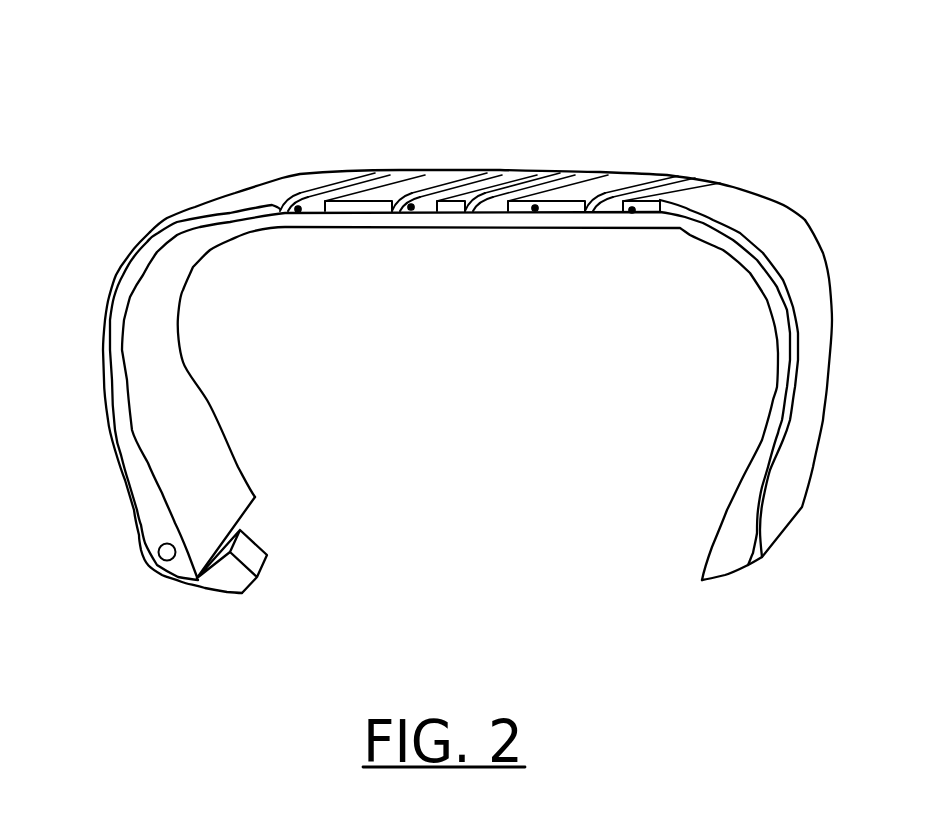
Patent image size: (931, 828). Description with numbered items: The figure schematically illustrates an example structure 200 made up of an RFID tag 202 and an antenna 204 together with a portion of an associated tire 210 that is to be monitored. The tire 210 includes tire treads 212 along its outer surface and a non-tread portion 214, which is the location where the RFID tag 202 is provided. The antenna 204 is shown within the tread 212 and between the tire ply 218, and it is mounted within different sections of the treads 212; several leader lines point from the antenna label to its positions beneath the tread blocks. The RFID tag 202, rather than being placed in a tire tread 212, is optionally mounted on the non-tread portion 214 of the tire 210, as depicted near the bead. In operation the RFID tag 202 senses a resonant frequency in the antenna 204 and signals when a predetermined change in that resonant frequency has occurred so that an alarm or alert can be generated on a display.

The structure 200 is at (471, 35).
The RFID tag 202 is at (225, 596).
The antenna 204 is at (626, 217).
The tire 210 is at (568, 132).
The tire treads 212 is at (308, 199).
The non-tread portion 214 is at (156, 517).
The tire ply 218 is at (673, 227).